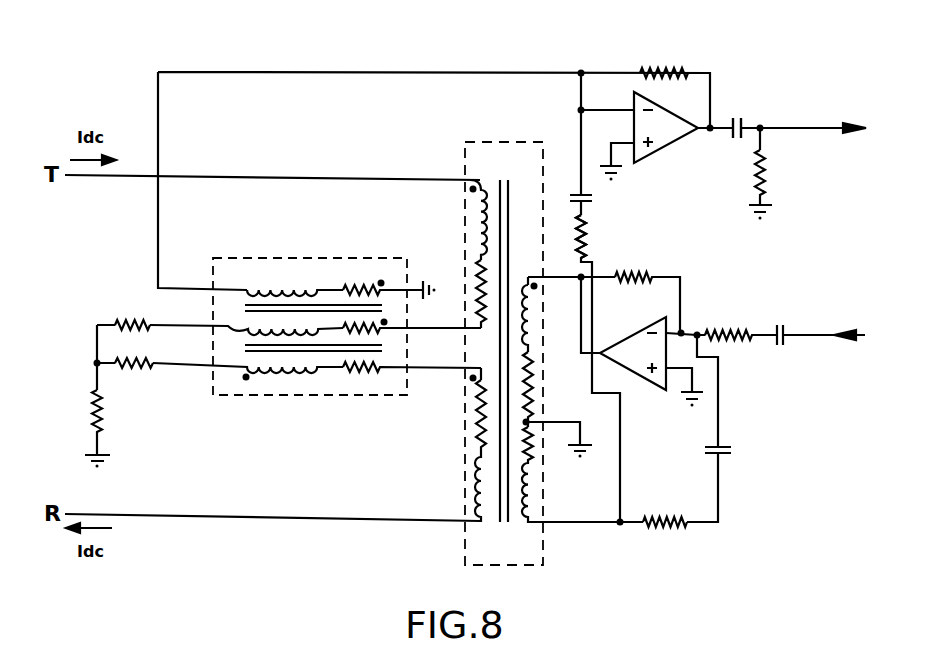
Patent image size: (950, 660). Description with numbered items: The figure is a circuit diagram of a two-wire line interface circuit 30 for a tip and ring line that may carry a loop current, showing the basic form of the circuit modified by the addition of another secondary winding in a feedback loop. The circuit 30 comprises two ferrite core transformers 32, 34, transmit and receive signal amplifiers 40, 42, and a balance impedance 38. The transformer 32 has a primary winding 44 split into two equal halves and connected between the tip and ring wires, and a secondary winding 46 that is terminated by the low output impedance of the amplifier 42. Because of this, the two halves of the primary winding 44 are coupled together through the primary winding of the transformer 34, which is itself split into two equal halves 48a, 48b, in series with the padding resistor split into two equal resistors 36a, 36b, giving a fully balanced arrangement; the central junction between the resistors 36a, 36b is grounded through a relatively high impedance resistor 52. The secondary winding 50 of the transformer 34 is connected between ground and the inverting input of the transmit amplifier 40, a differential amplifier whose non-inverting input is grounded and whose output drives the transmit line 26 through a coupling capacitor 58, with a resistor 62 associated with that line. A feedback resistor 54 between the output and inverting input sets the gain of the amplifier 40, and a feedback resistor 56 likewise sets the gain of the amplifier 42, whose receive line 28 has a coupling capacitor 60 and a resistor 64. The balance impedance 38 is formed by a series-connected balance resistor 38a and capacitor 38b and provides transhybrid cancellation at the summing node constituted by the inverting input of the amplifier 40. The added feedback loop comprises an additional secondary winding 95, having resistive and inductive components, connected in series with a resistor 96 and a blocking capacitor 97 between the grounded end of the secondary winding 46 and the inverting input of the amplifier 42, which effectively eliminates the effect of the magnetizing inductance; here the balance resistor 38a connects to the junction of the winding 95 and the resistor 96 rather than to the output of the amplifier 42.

The transmit line 26 is at (815, 132).
The receive line 28 is at (810, 331).
The two-wire line interface circuit 30 is at (485, 69).
The transformer 32 is at (465, 150).
The transformer 34 is at (266, 258).
The resistor 36a is at (136, 320).
The resistor 36b is at (135, 372).
The balance impedance 38 is at (633, 296).
The balance resistor 38a is at (594, 238).
The capacitor 38b is at (594, 202).
The transmit amplifier 40 is at (663, 150).
The receive amplifier 42 is at (646, 324).
The primary winding 44 is at (478, 225).
The secondary winding 46 is at (536, 330).
The primary winding half 48a is at (228, 326).
The primary winding half 48b is at (281, 395).
The secondary winding 50 is at (298, 288).
The resistor 52 is at (92, 411).
The feedback resistor 54 is at (663, 72).
The feedback resistor 56 is at (638, 272).
The coupling capacitor 58 is at (737, 118).
The coupling capacitor 60 is at (779, 326).
The resistor 62 is at (766, 176).
The resistor 64 is at (733, 327).
The additional secondary winding 95 is at (538, 489).
The resistor 96 is at (660, 519).
The blocking capacitor 97 is at (731, 452).